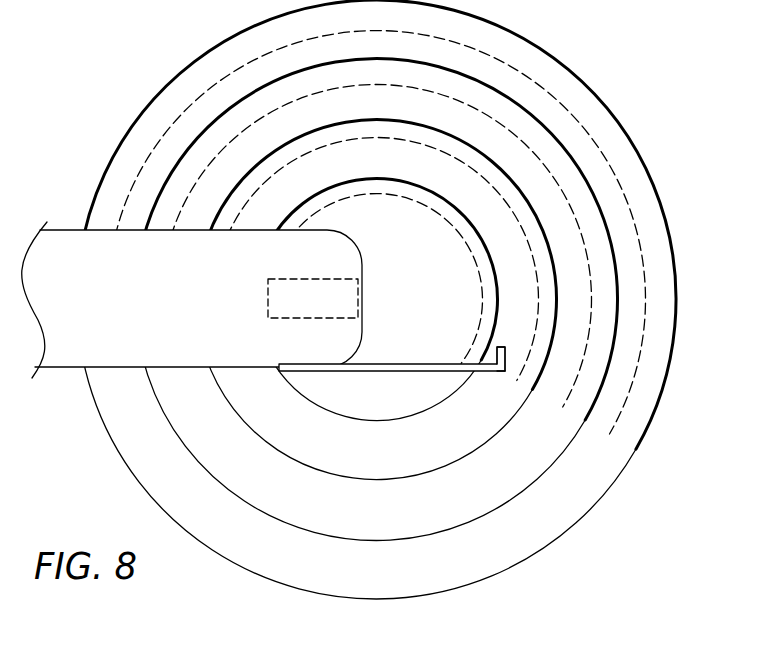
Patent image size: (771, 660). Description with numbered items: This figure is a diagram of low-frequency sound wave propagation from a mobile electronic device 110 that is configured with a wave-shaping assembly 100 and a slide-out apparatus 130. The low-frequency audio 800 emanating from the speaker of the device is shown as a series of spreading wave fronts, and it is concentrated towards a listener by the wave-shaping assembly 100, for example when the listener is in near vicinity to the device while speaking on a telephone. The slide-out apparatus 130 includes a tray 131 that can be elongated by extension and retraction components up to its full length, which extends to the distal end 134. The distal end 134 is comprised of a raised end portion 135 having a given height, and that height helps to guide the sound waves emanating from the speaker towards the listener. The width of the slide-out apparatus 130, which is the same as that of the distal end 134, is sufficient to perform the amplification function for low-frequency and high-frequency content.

The low-frequency audio 800 is at (303, 88).
The mobile electronic device 110 is at (107, 212).
The wave-shaping assembly 100 is at (313, 290).
The slide-out apparatus 130 is at (490, 439).
The tray 131 is at (377, 372).
The distal end 134 is at (508, 392).
The raised end portion 135 is at (514, 355).